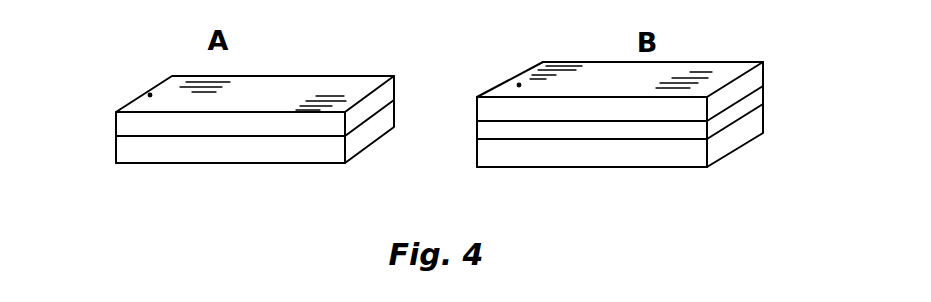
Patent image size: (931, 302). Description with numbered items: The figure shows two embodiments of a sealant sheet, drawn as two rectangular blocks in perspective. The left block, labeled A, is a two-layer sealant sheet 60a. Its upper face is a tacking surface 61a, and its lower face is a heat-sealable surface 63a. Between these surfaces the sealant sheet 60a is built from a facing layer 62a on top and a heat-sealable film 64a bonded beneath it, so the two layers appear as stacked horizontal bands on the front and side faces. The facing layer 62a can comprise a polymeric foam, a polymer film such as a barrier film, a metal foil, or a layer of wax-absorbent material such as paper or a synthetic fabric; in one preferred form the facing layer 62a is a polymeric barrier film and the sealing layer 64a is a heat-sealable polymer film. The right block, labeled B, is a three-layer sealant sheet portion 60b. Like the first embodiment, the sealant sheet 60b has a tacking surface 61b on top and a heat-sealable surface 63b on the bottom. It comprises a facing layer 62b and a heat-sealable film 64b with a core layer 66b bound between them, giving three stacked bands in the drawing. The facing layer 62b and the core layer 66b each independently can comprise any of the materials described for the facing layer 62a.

The sealant sheet 60a is at (239, 129).
The tacking surface 61a is at (150, 95).
The facing layer 62a is at (118, 124).
The heat-sealable surface 63a is at (248, 165).
The heat-sealable film 64a is at (118, 150).
The sealant sheet 60b is at (644, 120).
The tacking surface 61b is at (519, 85).
The facing layer 62b is at (760, 78).
The heat-sealable surface 63b is at (600, 168).
The heat-sealable film 64b is at (756, 128).
The core layer 66b is at (756, 101).